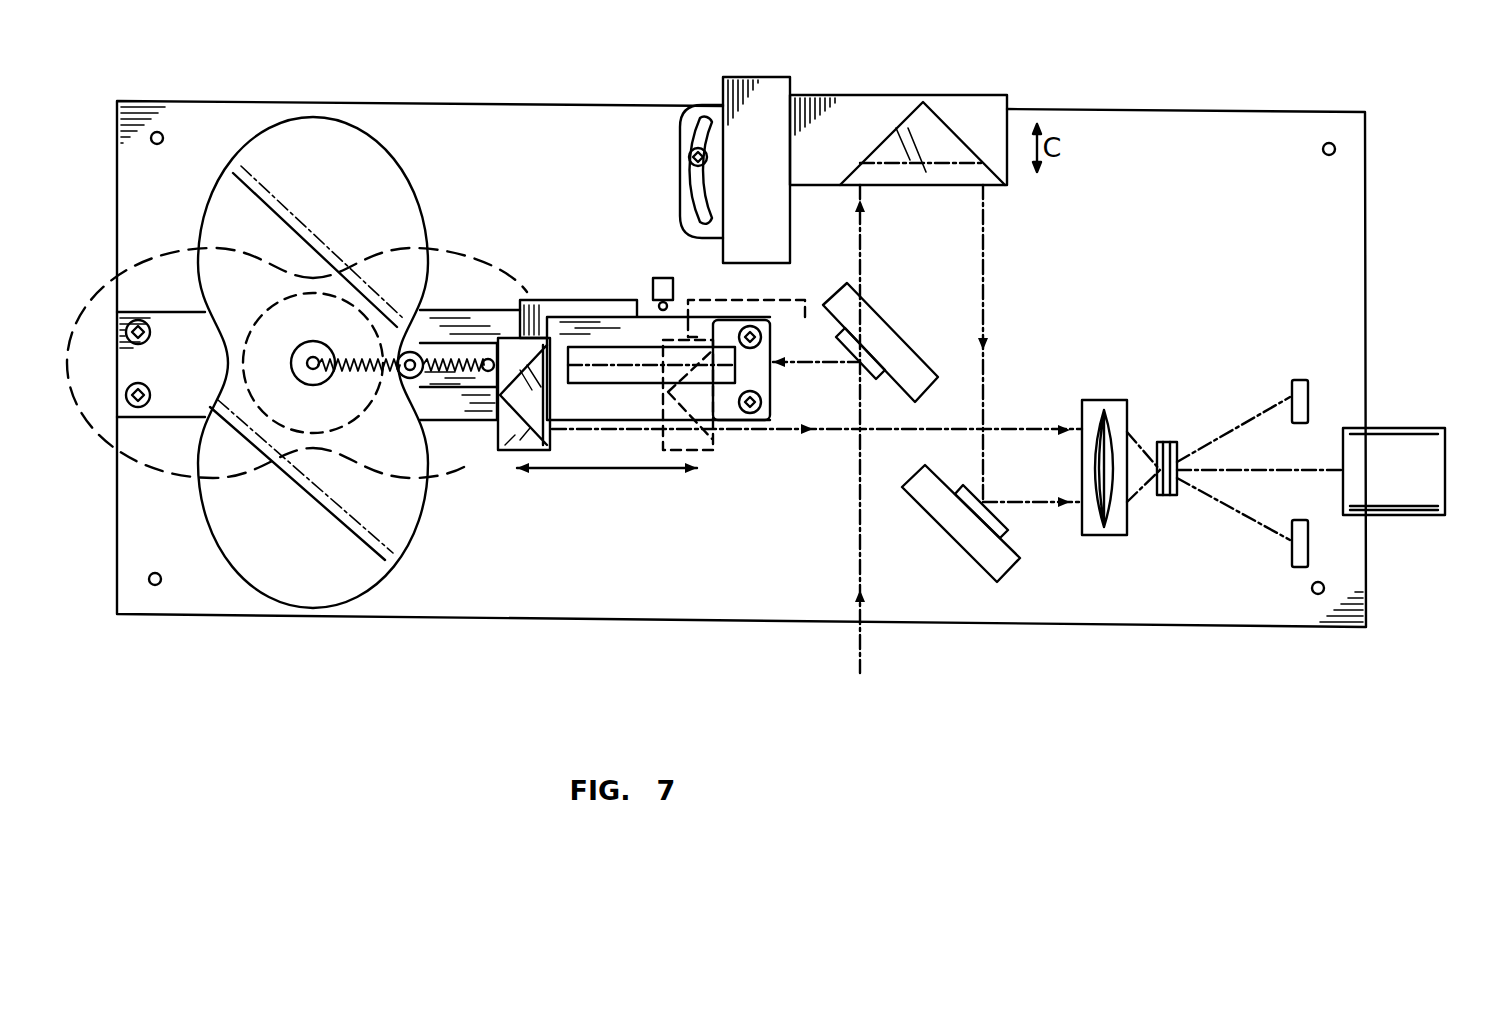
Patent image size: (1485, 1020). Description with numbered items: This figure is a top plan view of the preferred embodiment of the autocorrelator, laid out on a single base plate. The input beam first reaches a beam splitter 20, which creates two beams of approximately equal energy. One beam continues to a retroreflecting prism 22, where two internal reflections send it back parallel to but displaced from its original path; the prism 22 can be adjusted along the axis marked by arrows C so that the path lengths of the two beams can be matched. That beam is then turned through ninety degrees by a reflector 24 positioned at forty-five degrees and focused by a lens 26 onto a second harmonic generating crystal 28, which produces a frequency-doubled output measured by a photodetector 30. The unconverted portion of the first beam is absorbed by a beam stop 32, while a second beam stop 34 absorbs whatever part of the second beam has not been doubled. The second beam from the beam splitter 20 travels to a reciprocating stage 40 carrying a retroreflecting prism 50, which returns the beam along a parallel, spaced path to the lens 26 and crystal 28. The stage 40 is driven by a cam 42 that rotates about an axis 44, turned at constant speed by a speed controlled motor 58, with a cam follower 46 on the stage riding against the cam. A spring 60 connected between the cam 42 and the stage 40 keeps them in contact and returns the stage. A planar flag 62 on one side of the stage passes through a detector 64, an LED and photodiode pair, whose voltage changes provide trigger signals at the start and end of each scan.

The beam splitter 20 is at (883, 313).
The retroreflecting prism 22 is at (927, 118).
The reflector 24 is at (1002, 532).
The lens 26 is at (1097, 400).
The second harmonic generating crystal 28 is at (1168, 497).
The photodetector 30 is at (1396, 428).
The beam stop 32 is at (1293, 382).
The second beam stop 34 is at (1290, 557).
The stage 40 is at (477, 462).
The cam 42 is at (330, 180).
The axis 44 is at (306, 360).
The cam follower 46 is at (413, 350).
The retroreflecting prism 50 is at (512, 452).
The speed controlled motor 58 is at (347, 423).
The spring 60 is at (463, 360).
The planar flag 62 is at (580, 300).
The detector 64 is at (660, 293).